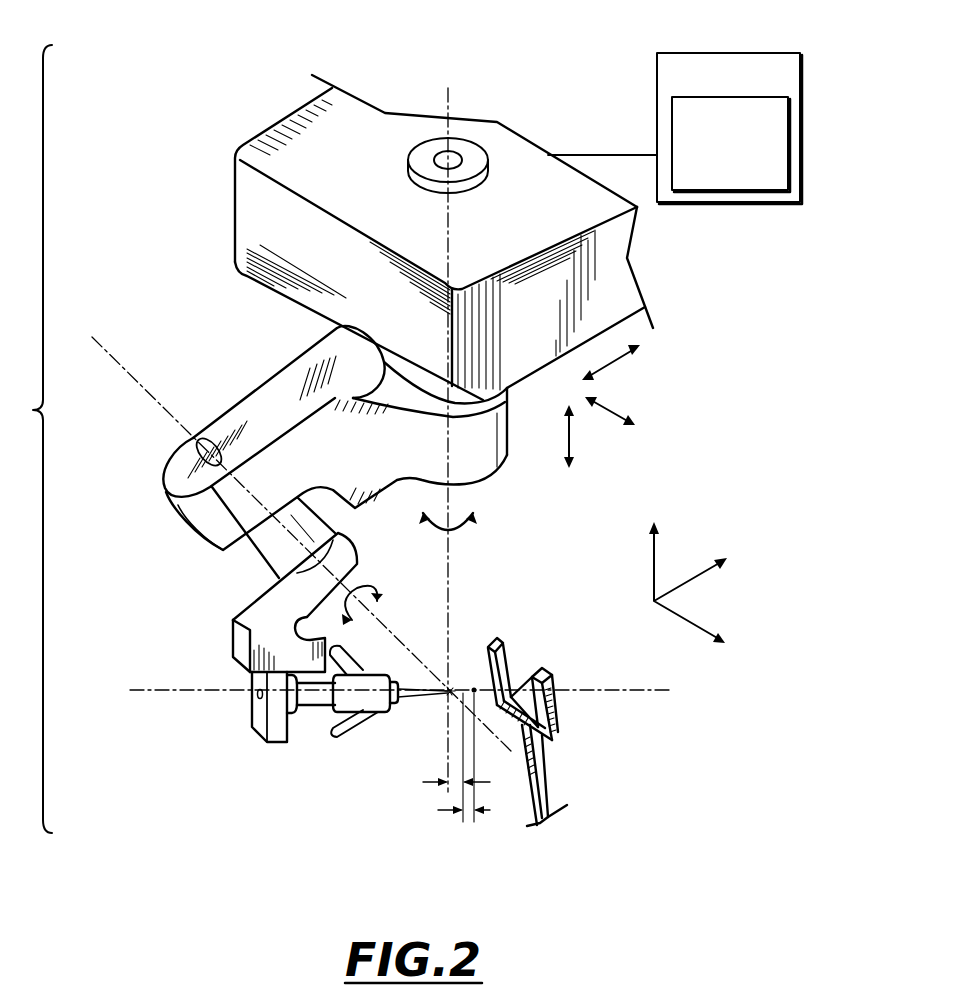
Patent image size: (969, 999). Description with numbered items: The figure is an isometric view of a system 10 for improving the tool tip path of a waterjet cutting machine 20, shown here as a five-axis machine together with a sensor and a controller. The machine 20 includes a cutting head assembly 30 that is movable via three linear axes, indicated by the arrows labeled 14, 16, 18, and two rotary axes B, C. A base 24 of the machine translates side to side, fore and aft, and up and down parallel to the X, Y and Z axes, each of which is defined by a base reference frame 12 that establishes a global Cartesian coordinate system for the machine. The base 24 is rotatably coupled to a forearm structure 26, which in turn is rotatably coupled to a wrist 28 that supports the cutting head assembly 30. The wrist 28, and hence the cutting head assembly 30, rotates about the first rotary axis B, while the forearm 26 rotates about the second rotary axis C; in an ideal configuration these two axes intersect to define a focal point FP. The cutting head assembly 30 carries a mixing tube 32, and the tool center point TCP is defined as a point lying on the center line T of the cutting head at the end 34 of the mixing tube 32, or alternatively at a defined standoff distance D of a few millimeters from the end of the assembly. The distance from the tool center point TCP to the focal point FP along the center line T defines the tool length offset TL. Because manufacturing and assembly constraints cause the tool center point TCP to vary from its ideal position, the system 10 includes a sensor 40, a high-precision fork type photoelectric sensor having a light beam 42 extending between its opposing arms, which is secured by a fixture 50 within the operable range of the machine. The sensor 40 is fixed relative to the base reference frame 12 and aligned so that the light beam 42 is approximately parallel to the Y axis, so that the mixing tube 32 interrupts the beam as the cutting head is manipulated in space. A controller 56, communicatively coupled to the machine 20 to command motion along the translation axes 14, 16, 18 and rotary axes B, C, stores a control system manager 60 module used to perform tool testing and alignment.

The system 10 is at (28, 439).
The base reference frame 12 is at (654, 573).
The linear axis arrow 14 is at (612, 412).
The linear axis arrow 16 is at (612, 362).
The linear axis arrow 18 is at (571, 437).
The waterjet cutting machine 20 is at (200, 292).
The base 24 is at (623, 296).
The forearm structure 26 is at (207, 518).
The wrist 28 is at (251, 614).
The cutting head assembly 30 is at (378, 712).
The mixing tube 32 is at (409, 698).
The end of mixing tube 34 is at (444, 701).
The sensor 40 is at (550, 716).
The light beam 42 is at (513, 668).
The fixture 50 is at (542, 781).
The controller 56 is at (766, 54).
The control system manager 60 is at (730, 97).
The first rotary axis B is at (392, 623).
The second rotary axis C is at (450, 547).
The center line T is at (182, 693).
The focal point FP is at (451, 687).
The tool center point TCP is at (463, 690).
The tool length offset TL is at (443, 785).
The standoff distance D is at (482, 811).